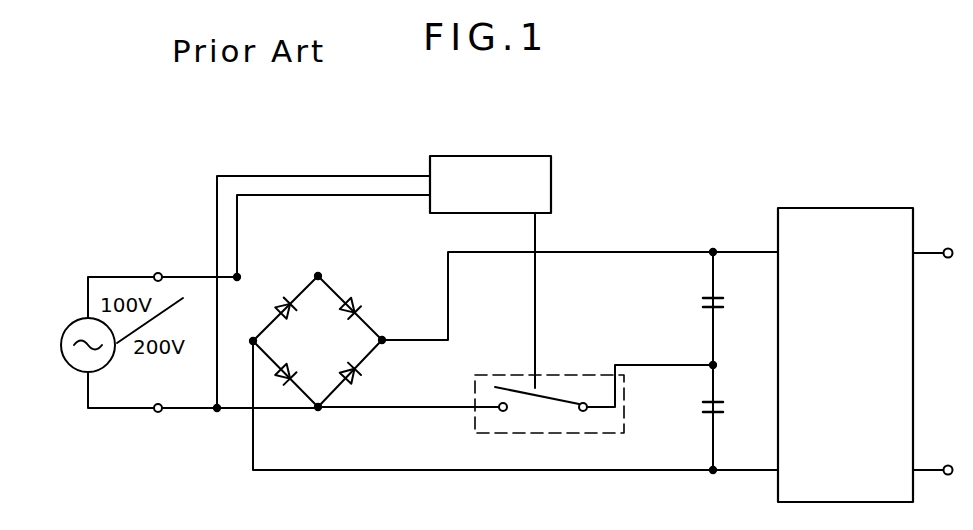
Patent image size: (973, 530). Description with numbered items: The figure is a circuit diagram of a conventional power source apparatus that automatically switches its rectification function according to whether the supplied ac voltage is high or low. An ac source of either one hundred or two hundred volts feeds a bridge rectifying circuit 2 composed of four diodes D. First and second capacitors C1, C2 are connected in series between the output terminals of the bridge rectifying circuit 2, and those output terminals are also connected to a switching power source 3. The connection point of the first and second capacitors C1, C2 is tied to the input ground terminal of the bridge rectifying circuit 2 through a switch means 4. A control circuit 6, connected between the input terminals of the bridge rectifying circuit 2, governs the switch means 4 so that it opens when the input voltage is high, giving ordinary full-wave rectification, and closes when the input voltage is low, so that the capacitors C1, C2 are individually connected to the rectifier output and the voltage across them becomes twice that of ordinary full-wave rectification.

The bridge rectifying circuit 2 is at (318, 311).
The switching power source 3 is at (841, 220).
The switch means 4 is at (562, 376).
The control circuit 6 is at (488, 155).
The first capacitor C1 is at (728, 304).
The second capacitor C2 is at (728, 409).
The diode D is at (315, 336).